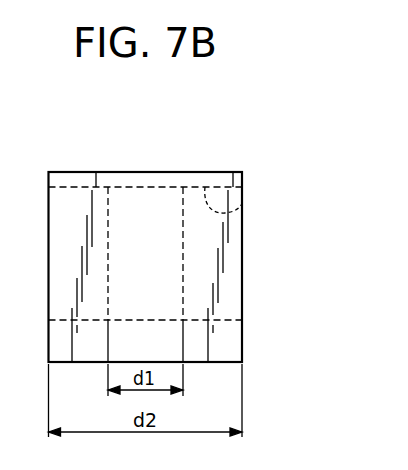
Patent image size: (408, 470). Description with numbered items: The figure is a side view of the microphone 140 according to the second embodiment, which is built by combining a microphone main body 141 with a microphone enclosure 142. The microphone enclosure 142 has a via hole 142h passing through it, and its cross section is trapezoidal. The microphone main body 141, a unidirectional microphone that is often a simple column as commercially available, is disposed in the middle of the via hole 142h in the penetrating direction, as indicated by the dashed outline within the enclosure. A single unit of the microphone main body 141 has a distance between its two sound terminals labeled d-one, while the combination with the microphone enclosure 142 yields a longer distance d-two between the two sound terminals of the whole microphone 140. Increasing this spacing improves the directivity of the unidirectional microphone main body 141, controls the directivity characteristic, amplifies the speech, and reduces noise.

The microphone 140 is at (132, 163).
The microphone main body 141 is at (162, 272).
The microphone enclosure 142 is at (216, 178).
The via hole 142h is at (242, 209).